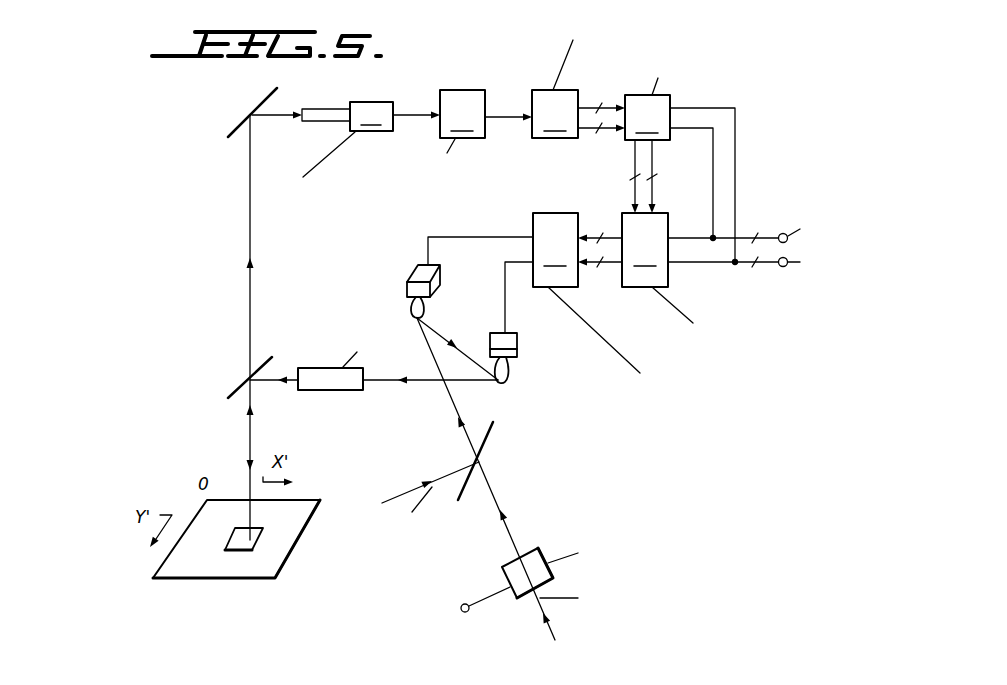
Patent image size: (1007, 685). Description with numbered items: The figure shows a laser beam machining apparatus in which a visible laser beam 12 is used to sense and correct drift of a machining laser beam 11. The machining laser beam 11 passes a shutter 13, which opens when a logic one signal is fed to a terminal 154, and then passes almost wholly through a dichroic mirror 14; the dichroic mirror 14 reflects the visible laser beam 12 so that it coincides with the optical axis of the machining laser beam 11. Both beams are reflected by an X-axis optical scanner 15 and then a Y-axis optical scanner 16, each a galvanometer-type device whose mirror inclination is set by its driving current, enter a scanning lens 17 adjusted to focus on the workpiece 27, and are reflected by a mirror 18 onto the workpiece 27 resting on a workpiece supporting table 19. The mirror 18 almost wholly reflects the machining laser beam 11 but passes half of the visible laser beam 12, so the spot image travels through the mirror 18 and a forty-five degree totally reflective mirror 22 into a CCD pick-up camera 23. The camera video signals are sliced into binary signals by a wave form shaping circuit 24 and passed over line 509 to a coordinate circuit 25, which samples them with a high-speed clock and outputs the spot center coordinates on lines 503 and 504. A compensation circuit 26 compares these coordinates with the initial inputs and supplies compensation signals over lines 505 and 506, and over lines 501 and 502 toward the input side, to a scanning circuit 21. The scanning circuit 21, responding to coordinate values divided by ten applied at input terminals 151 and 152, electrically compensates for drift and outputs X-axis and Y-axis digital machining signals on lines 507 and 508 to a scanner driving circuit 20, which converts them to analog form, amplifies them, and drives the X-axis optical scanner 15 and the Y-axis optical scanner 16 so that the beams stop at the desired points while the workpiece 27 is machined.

The machining laser beam 11 is at (550, 625).
The visible laser beam 12 is at (403, 493).
The shutter 13 is at (532, 547).
The dichroic mirror 14 is at (487, 443).
The X-axis optical scanner 15 is at (437, 288).
The Y-axis optical scanner 16 is at (520, 345).
The scanning lens 17 is at (308, 390).
The mirror 18 is at (240, 382).
The workpiece supporting table 19 is at (200, 560).
The scanner driving circuit 20 is at (678, 320).
The scanning circuit 21 is at (711, 292).
The totally reflective mirror 22 is at (265, 100).
The CCD pick-up camera 23 is at (332, 164).
The wave form shaping circuit 24 is at (446, 142).
The coordinate circuit 25 is at (690, 77).
The compensation circuit 26 is at (741, 98).
The workpiece 27 is at (240, 552).
The input terminal 151 is at (800, 229).
The input terminal 152 is at (800, 262).
The terminal 154 is at (462, 617).
The signal line 501 is at (743, 265).
The signal line 502 is at (750, 233).
The line 503 is at (593, 107).
The line 504 is at (601, 142).
The signal line 505 is at (653, 162).
The signal line 506 is at (633, 162).
The signal line 507 is at (613, 232).
The signal line 508 is at (610, 277).
The line 509 is at (500, 113).